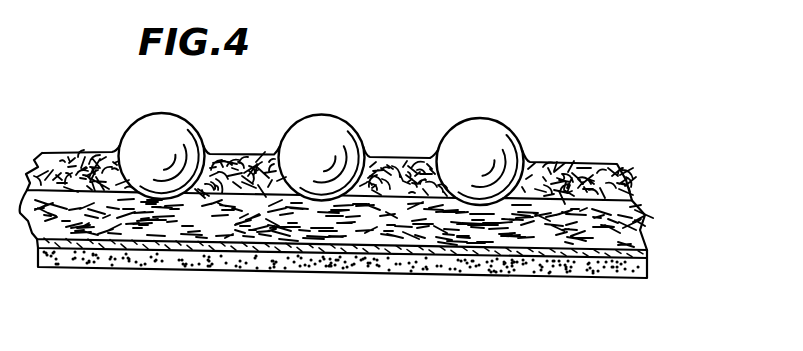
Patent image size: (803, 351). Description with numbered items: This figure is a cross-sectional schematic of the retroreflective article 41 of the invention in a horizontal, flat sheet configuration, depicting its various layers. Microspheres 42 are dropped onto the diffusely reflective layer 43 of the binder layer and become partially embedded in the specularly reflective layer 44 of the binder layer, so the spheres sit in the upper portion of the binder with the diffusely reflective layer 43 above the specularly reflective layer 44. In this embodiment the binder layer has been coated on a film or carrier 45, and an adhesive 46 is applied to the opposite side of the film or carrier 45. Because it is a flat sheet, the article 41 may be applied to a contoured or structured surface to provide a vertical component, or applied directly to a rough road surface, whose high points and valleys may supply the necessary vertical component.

The retroreflective article 41 is at (482, 80).
The microspheres 42 is at (507, 125).
The diffusely reflective layer 43 is at (592, 162).
The specularly reflective layer 44 is at (640, 208).
The film or carrier 45 is at (610, 273).
The adhesive 46 is at (563, 280).